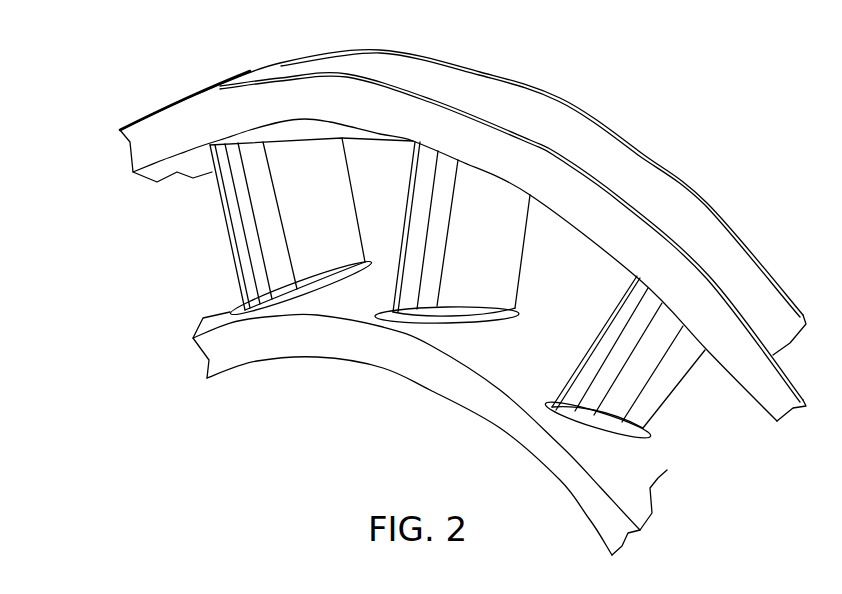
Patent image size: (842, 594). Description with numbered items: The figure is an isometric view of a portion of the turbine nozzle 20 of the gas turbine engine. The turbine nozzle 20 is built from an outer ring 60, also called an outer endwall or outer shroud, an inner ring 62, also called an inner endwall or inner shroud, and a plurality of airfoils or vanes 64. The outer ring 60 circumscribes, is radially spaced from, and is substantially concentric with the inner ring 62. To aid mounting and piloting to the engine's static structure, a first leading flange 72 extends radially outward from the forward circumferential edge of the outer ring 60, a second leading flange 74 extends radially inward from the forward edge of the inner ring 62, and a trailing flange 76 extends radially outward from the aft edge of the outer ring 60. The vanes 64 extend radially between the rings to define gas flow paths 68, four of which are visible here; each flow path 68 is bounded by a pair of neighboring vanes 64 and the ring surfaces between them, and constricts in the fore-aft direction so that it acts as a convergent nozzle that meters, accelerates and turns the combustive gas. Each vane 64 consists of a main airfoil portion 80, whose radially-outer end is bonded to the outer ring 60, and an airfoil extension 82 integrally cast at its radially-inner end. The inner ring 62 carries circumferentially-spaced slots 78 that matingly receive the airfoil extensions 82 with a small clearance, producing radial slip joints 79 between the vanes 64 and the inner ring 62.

The turbine nozzle 20 is at (125, 84).
The outer ring 60 is at (781, 431).
The inner ring 62 is at (257, 360).
The vane 64 is at (236, 240).
The gas flow path 68 is at (208, 209).
The first leading flange 72 is at (287, 92).
The second leading flange 74 is at (447, 396).
The trailing flange 76 is at (502, 78).
The slot 78 is at (357, 267).
The radial slip joint 79 is at (288, 308).
The main airfoil portion 80 is at (329, 222).
The airfoil extension 82 is at (302, 289).